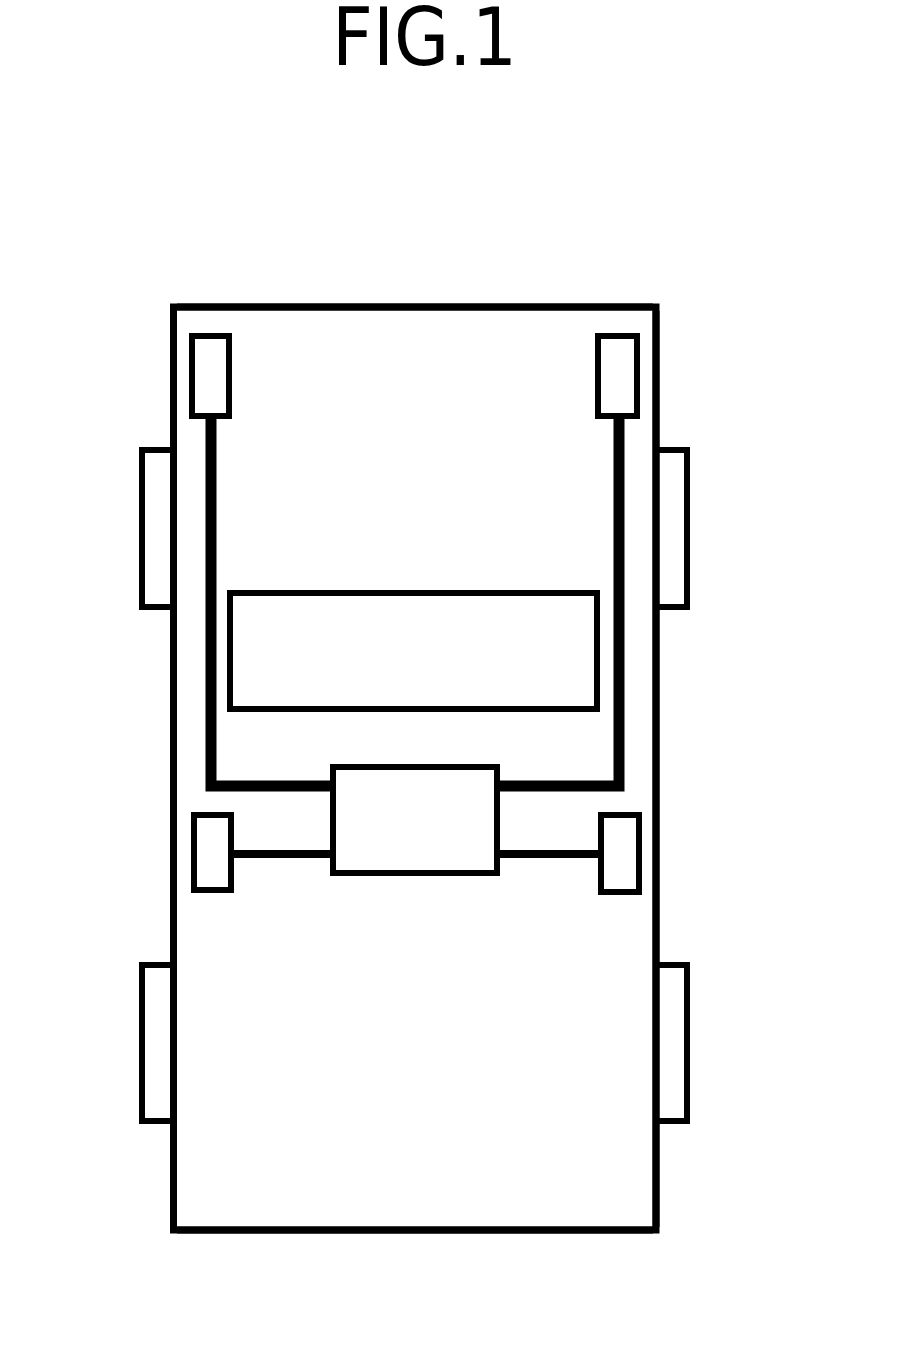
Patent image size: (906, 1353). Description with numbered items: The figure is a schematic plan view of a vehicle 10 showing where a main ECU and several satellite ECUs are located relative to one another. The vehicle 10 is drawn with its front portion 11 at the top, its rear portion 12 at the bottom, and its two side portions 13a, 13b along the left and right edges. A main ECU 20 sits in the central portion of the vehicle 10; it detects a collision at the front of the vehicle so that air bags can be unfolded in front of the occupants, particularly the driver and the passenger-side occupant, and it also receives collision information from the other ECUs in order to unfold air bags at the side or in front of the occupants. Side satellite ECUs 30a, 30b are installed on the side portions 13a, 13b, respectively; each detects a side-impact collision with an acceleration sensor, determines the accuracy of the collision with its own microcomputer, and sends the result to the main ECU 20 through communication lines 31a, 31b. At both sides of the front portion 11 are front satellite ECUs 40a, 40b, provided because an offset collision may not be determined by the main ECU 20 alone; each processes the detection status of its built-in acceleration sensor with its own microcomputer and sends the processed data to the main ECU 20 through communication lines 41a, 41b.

The vehicle 10 is at (343, 305).
The front portion 11 is at (516, 305).
The rear portion 12 is at (428, 1236).
The side portion 13a is at (171, 711).
The side portion 13b is at (659, 722).
The main ECU 20 is at (422, 878).
The side satellite ECU 30a is at (191, 852).
The side satellite ECU 30b is at (642, 850).
The communication line 31a is at (293, 861).
The communication line 31b is at (560, 861).
The front satellite ECU 40a is at (189, 376).
The front satellite ECU 40b is at (640, 362).
The communication line 41a is at (217, 492).
The communication line 41b is at (612, 495).